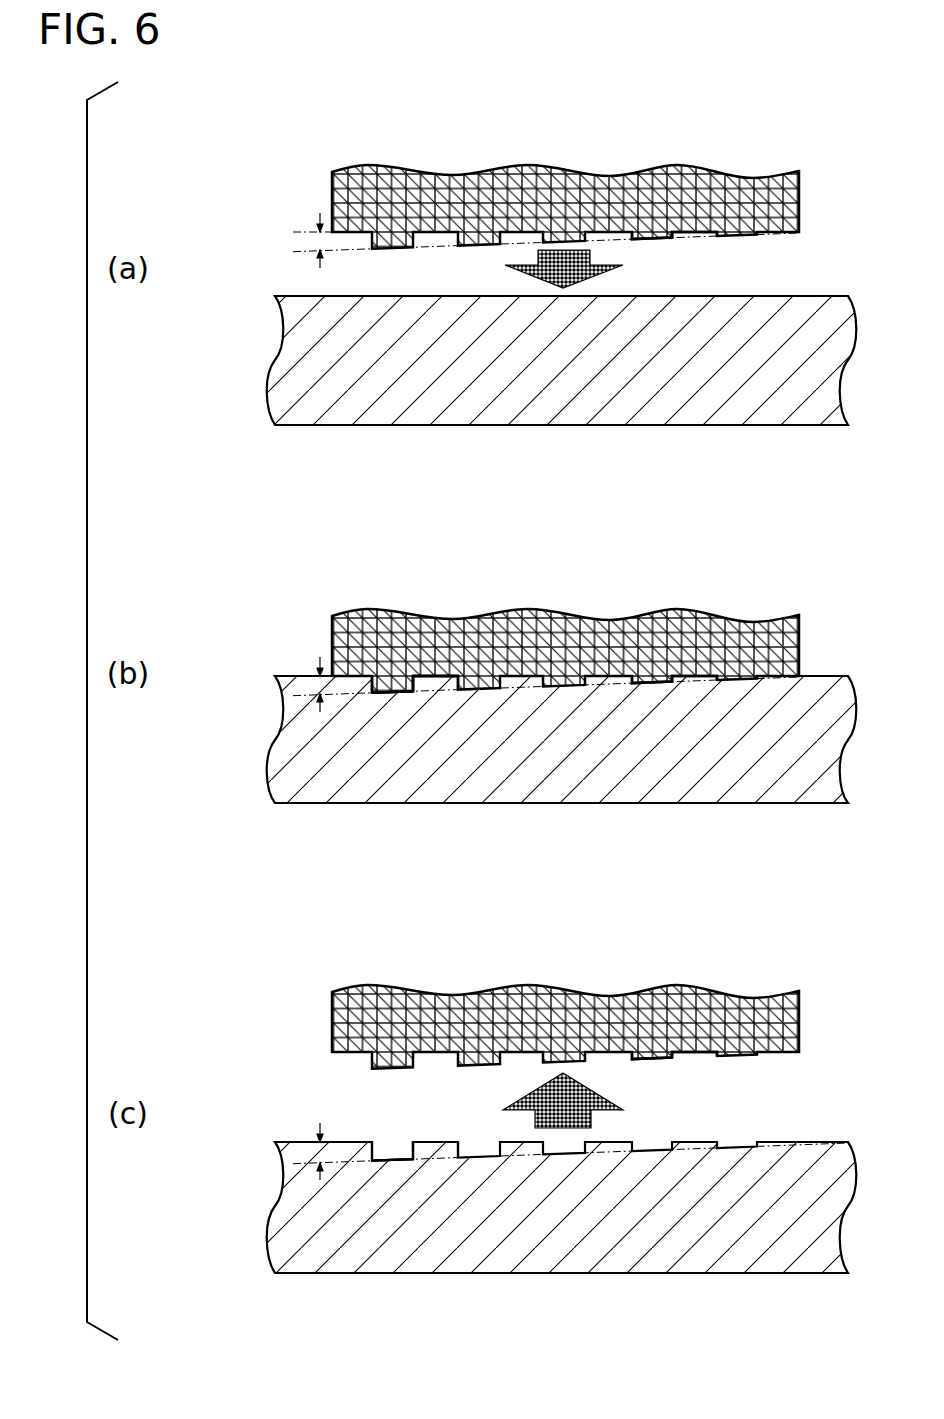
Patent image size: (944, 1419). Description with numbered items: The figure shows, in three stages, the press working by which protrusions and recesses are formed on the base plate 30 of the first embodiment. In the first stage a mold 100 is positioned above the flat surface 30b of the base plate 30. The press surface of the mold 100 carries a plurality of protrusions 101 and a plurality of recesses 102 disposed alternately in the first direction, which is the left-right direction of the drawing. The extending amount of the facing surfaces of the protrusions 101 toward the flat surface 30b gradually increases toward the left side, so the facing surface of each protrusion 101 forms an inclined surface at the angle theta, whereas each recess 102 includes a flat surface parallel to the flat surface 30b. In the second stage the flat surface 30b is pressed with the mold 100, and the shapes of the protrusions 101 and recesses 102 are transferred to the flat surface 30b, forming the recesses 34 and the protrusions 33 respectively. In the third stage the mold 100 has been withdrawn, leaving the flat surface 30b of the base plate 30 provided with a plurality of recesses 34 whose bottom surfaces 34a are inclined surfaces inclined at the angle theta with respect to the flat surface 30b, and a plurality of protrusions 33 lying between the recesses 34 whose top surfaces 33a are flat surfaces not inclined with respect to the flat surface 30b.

The mold 100 is at (332, 186).
The protrusion 101 is at (653, 240).
The recess 102 is at (703, 240).
The base plate 30 is at (548, 428).
The flat surface 30b is at (294, 296).
The protrusion 33 is at (427, 690).
The top surface 33a is at (407, 1018).
The recess 34 is at (480, 695).
The bottom surface 34a is at (469, 1011).